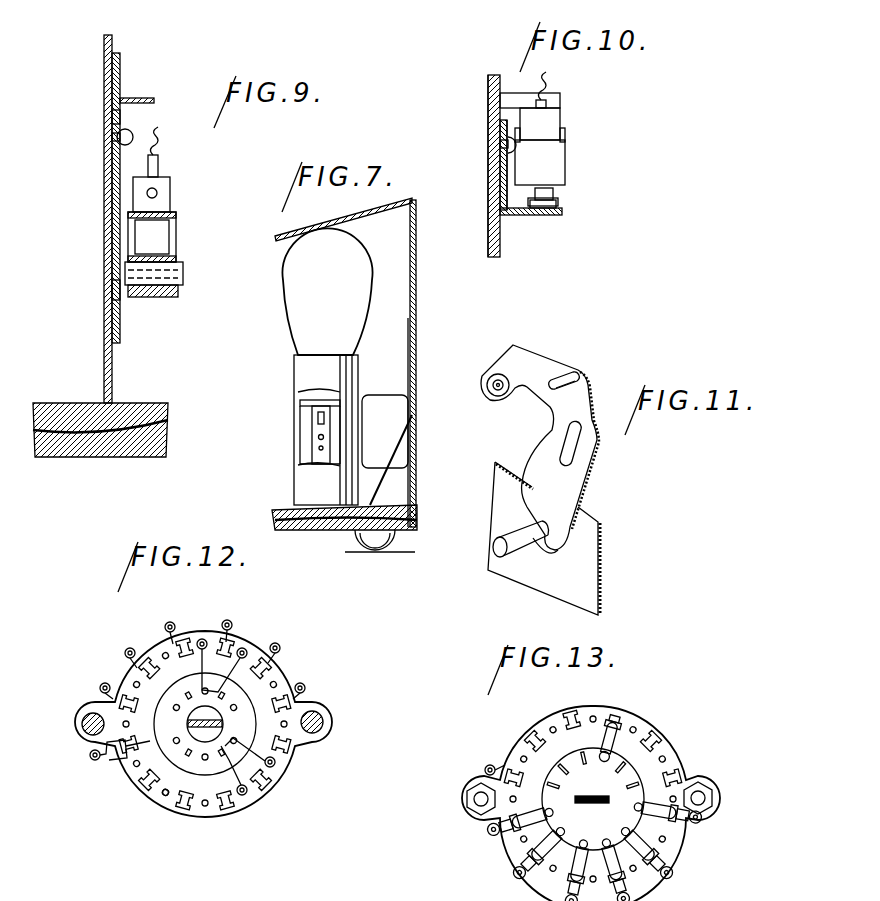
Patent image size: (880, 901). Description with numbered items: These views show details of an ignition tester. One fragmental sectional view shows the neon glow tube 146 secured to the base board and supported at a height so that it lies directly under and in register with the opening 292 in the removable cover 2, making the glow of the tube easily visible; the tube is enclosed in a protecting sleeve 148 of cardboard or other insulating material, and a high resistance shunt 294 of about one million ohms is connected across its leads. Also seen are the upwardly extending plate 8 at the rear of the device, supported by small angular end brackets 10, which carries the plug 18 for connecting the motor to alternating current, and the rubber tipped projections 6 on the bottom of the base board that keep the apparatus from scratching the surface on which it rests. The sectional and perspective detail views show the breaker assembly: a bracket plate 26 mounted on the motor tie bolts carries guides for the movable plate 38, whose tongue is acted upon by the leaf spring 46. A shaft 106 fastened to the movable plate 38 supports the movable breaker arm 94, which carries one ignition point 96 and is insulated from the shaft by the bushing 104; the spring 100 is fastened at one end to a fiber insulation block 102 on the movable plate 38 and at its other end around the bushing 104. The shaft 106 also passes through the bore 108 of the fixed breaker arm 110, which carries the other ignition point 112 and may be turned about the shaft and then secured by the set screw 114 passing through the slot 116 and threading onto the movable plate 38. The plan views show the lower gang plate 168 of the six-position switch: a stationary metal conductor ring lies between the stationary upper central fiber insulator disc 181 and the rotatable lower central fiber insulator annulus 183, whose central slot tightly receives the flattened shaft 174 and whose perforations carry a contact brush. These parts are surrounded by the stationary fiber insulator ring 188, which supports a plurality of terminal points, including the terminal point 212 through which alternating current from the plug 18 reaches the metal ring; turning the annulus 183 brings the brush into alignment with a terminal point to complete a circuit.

In FIG. 7, the removable cover 2 is at (416, 299).
In FIG. 7, the rubber tipped projections 6 is at (378, 544).
In FIG. 7, the upwardly extending plate 8 is at (408, 344).
In FIG. 7, the angular end brackets 10 is at (391, 460).
In FIG. 7, the plug 18 is at (402, 403).
In FIG. 9, the bracket plate 26 is at (104, 347).
In FIG. 10, the bracket plate 26 is at (488, 242).
In FIG. 9, the movable plate 38 is at (104, 212).
In FIG. 10, the movable plate 38 is at (500, 242).
In FIG. 11, the movable plate 38 is at (605, 557).
In FIG. 9, the leaf spring 46 is at (140, 98).
In FIG. 9, the movable breaker arm 94 is at (176, 233).
In FIG. 10, the movable breaker arm 94 is at (560, 162).
In FIG. 10, the ignition point 96 is at (556, 192).
In FIG. 9, the spring 100 is at (163, 199).
In FIG. 10, the spring 100 is at (545, 122).
In FIG. 9, the fiber insulation block 102 is at (170, 184).
In FIG. 10, the fiber insulation block 102 is at (560, 100).
In FIG. 9, the bushing 104 is at (178, 290).
In FIG. 9, the shaft 106 is at (183, 271).
In FIG. 11, the shaft 106 is at (510, 540).
In FIG. 9, the bore 108 is at (112, 290).
In FIG. 11, the bore 108 is at (548, 549).
In FIG. 9, the fixed breaker arm 110 is at (112, 162).
In FIG. 10, the fixed breaker arm 110 is at (500, 196).
In FIG. 11, the fixed breaker arm 110 is at (565, 493).
In FIG. 10, the ignition point 112 is at (556, 205).
In FIG. 11, the ignition point 112 is at (502, 396).
In FIG. 9, the set screw 114 is at (133, 137).
In FIG. 10, the set screw 114 is at (500, 145).
In FIG. 9, the slot 116 is at (112, 117).
In FIG. 10, the slot 116 is at (505, 158).
In FIG. 11, the slot 116 is at (566, 378).
In FIG. 7, the neon glow tube 146 is at (358, 263).
In FIG. 7, the protecting sleeve 148 is at (300, 379).
In FIG. 12, the lower gang plate 168 is at (253, 641).
In FIG. 13, the lower gang plate 168 is at (666, 739).
In FIG. 12, the flattened shaft 174 is at (207, 736).
In FIG. 13, the flattened shaft 174 is at (606, 796).
In FIG. 12, the upper central fiber insulator disc 181 is at (168, 701).
In FIG. 13, the lower central fiber insulator annulus 183 is at (575, 760).
In FIG. 12, the stationary fiber insulator ring 188 is at (153, 804).
In FIG. 13, the stationary fiber insulator ring 188 is at (542, 714).
In FIG. 12, the terminal point 212 is at (95, 760).
In FIG. 13, the terminal point 212 is at (491, 765).
In FIG. 7, the opening 292 is at (312, 236).
In FIG. 7, the high resistance shunt 294 is at (312, 438).